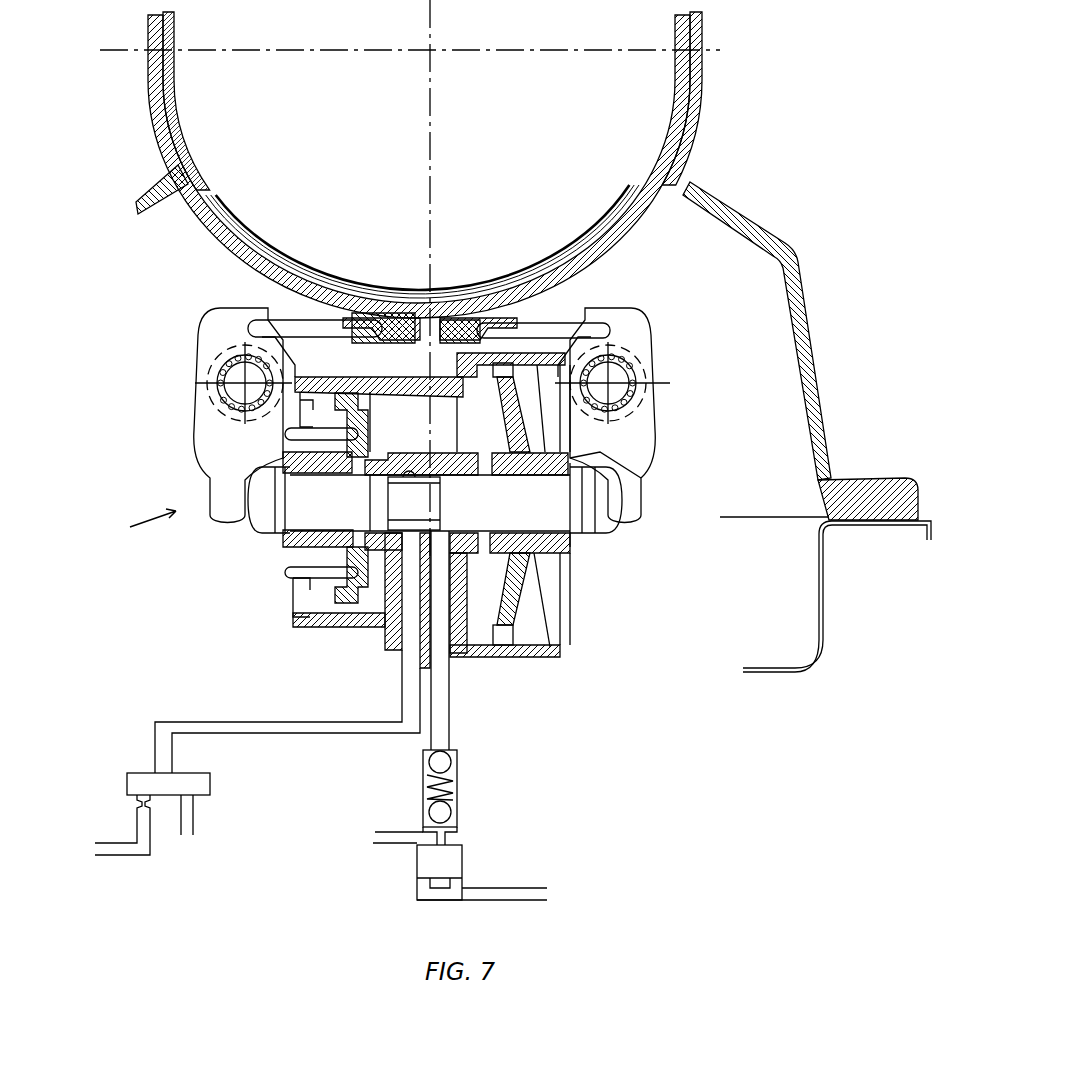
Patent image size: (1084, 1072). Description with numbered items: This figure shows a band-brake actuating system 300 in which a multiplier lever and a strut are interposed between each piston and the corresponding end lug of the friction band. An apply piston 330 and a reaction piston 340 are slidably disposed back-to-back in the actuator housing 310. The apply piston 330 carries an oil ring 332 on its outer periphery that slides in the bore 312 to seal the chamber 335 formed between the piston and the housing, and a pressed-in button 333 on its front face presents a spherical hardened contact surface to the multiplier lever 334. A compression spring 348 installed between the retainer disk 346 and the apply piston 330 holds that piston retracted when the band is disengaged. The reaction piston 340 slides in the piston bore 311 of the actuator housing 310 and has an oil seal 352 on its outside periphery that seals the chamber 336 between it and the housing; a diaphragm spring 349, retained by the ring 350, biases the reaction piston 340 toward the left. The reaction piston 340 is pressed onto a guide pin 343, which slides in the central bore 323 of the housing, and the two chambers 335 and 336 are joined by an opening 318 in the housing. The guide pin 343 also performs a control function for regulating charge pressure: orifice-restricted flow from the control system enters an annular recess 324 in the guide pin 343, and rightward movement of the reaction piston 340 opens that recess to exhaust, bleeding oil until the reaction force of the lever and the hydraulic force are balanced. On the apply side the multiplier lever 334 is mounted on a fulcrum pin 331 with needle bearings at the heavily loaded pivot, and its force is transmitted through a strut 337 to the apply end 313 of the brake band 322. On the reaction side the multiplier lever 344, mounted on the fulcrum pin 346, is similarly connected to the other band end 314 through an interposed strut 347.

The actuating system 300 is at (127, 528).
The actuator housing 310 is at (560, 330).
The piston bore 311 is at (635, 480).
The bore 312 is at (290, 420).
The apply end 313 is at (408, 318).
The band end 314 is at (450, 318).
The opening 318 is at (412, 413).
The brake band 322 is at (617, 228).
The central bore 323 is at (426, 470).
The annular recess 324 is at (425, 527).
The apply piston 330 is at (290, 555).
The fulcrum pin 331 is at (205, 390).
The oil ring 332 is at (350, 605).
The pressed-in button 333 is at (255, 527).
The multiplier lever 334 is at (235, 425).
The chamber 335 is at (375, 600).
The chamber 336 is at (543, 610).
The strut 337 is at (300, 330).
The reaction piston 340 is at (590, 545).
The guide pin 343 is at (600, 520).
The multiplier lever 344 is at (632, 430).
The retainer disk 346 is at (295, 583).
The strut 347 is at (540, 320).
The compression spring 348 is at (290, 620).
The diaphragm spring 349 is at (540, 590).
The ring 350 is at (510, 652).
The oil seal 352 is at (535, 655).